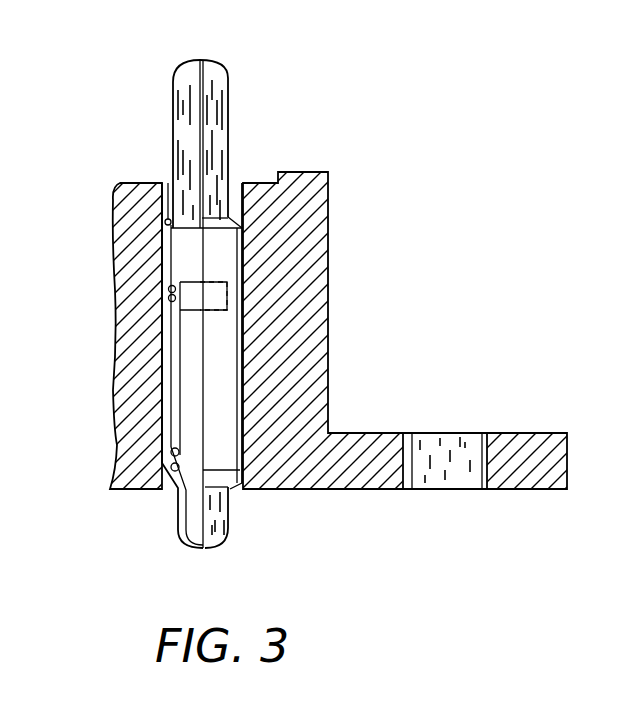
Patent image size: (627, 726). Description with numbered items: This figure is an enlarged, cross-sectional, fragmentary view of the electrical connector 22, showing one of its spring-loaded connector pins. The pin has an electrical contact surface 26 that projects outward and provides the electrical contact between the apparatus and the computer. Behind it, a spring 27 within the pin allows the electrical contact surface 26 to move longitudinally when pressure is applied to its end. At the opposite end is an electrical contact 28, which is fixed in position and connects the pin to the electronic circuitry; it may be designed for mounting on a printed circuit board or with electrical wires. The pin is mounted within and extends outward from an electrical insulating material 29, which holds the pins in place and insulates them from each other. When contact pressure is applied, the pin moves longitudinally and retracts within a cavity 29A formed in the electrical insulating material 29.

The electrical connector 22 is at (425, 332).
The electrical contact surface 26 is at (215, 62).
The spring 27 is at (110, 489).
The electrical contact 28 is at (233, 498).
The electrical insulating material 29 is at (332, 247).
The cavity 29A is at (170, 182).